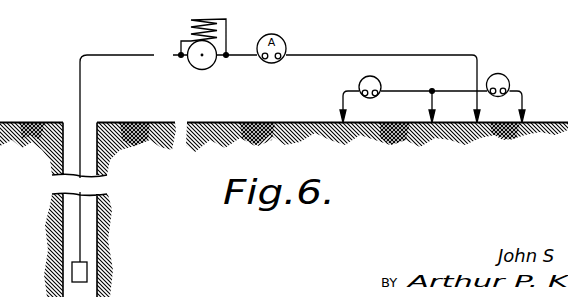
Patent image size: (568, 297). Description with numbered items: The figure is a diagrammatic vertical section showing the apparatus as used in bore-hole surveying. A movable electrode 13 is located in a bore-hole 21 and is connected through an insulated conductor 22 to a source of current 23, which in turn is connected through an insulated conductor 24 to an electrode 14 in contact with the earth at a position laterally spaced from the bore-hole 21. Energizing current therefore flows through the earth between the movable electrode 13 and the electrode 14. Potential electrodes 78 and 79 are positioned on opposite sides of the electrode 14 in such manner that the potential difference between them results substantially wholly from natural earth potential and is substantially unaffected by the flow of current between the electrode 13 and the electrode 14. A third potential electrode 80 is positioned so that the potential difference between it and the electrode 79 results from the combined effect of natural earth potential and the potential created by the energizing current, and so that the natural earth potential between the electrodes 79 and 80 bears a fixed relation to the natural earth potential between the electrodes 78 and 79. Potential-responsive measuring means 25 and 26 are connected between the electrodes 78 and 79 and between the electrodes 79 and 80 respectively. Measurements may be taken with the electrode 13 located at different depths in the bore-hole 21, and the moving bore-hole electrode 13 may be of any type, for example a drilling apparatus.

The movable electrode 13 is at (80, 273).
The electrode 14 is at (479, 74).
The bore-hole 21 is at (88, 232).
The insulated conductor 22 is at (118, 55).
The source of current 23 is at (205, 58).
The insulated conductor 24 is at (356, 54).
The potential-responsive measuring means 25 is at (509, 78).
The potential-responsive measuring means 26 is at (386, 75).
The potential electrode 78 is at (526, 99).
The potential electrode 79 is at (433, 98).
The third potential electrode 80 is at (347, 102).